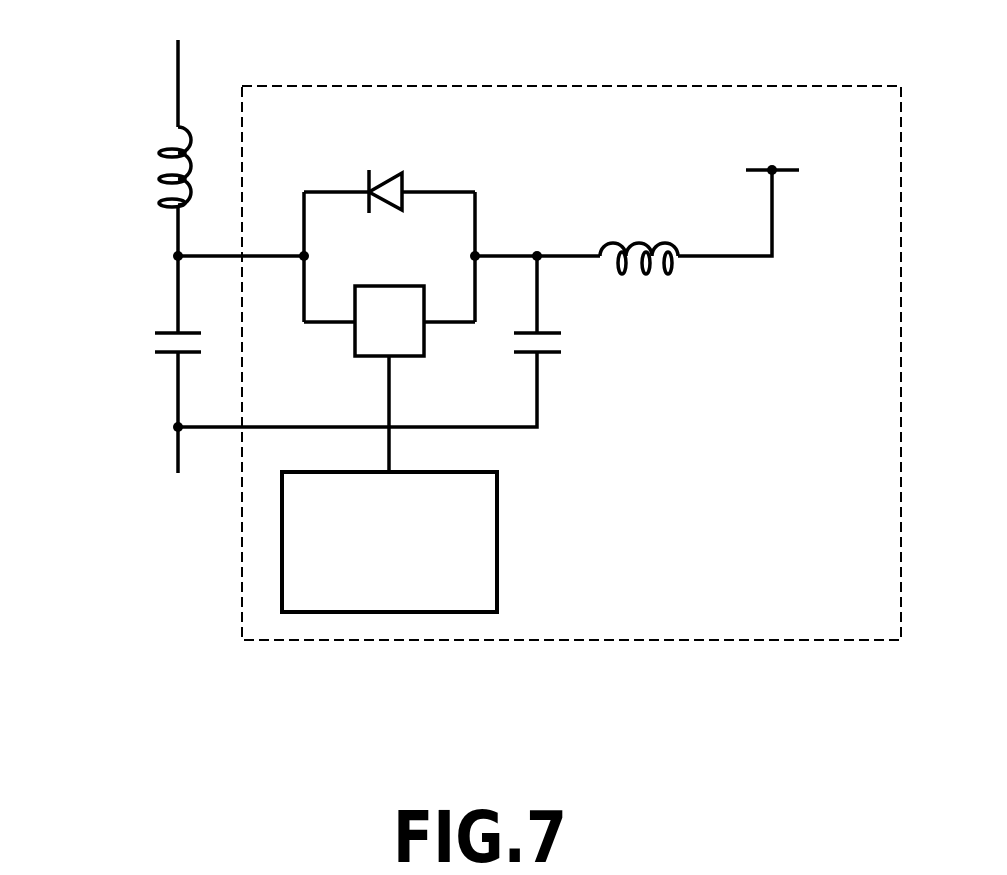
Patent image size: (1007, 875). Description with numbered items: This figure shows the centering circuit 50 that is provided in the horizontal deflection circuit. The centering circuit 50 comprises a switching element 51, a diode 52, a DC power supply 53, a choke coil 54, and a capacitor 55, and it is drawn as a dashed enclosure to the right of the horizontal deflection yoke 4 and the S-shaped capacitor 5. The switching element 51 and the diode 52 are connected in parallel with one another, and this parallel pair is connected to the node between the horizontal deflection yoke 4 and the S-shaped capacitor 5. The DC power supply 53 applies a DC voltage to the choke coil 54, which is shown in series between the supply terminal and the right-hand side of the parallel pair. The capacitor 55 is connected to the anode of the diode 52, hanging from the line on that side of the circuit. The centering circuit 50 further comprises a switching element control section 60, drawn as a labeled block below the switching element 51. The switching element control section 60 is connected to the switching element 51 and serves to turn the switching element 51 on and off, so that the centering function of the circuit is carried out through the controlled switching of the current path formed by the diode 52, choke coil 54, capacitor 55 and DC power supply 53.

The horizontal deflection yoke 4 is at (155, 156).
The S-shaped capacitor 5 is at (150, 334).
The centering circuit 50 is at (612, 86).
The switching element 51 is at (405, 357).
The diode 52 is at (386, 176).
The DC power supply 53 is at (790, 160).
The choke coil 54 is at (637, 232).
The capacitor 55 is at (565, 340).
The switching element control section 60 is at (497, 500).